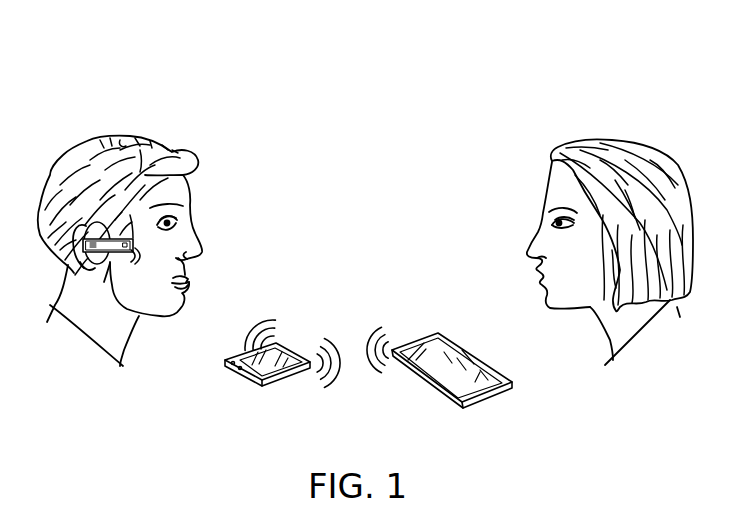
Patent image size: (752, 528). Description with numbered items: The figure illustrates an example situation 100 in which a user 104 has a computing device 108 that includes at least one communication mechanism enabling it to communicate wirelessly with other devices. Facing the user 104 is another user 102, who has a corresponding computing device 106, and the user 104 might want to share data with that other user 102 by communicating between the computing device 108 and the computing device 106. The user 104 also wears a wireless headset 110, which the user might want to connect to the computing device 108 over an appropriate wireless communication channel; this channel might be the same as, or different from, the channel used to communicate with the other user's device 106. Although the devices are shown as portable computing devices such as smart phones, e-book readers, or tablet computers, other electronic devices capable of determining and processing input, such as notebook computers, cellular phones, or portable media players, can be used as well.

The example situation 100 is at (655, 106).
The other user 102 is at (648, 353).
The user 104 is at (218, 167).
The computing device 106 is at (480, 395).
The computing device 108 is at (258, 385).
The wireless headset 110 is at (82, 266).